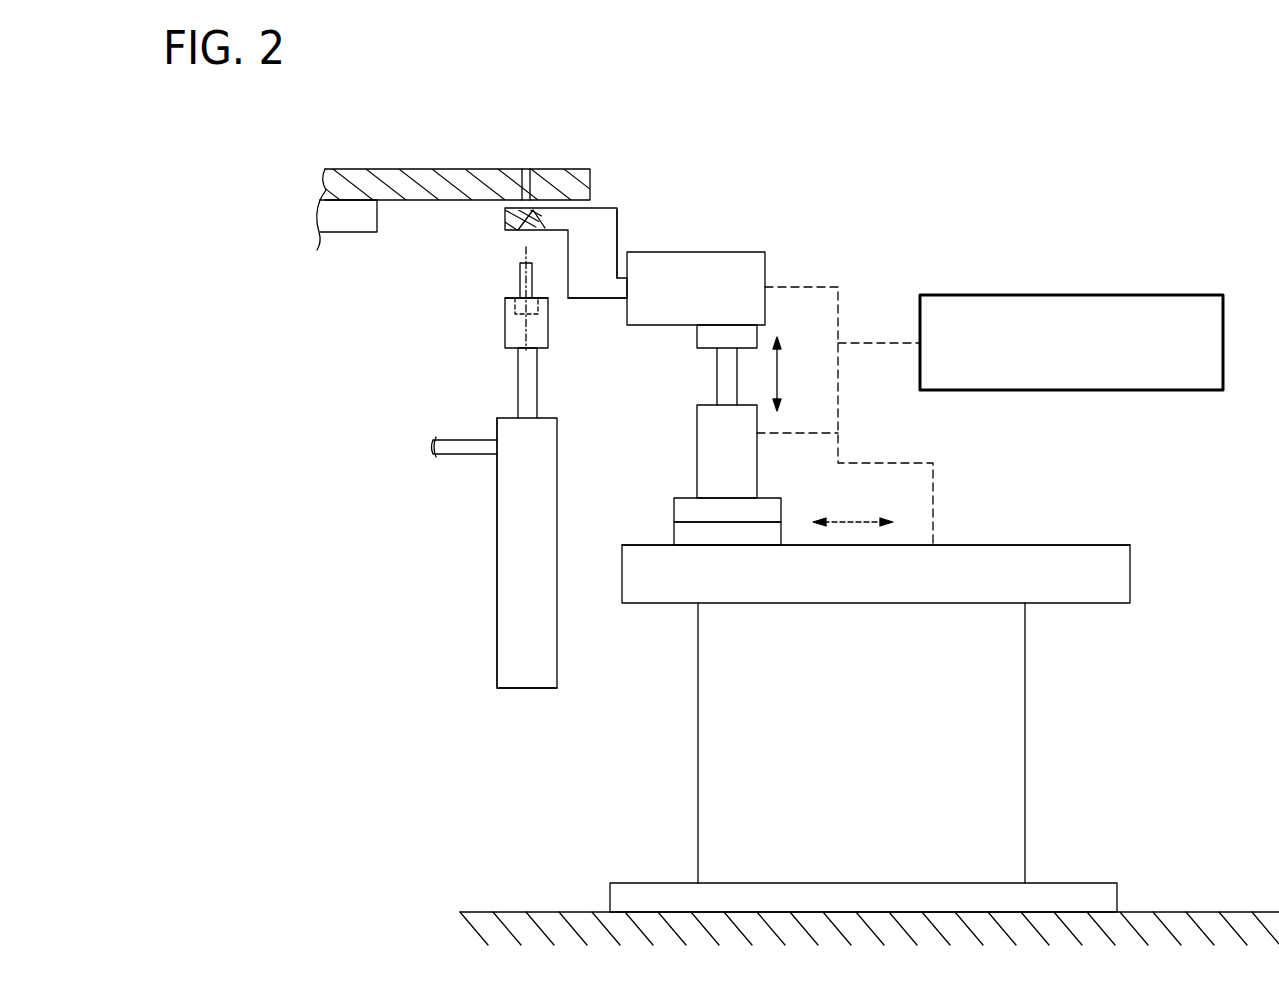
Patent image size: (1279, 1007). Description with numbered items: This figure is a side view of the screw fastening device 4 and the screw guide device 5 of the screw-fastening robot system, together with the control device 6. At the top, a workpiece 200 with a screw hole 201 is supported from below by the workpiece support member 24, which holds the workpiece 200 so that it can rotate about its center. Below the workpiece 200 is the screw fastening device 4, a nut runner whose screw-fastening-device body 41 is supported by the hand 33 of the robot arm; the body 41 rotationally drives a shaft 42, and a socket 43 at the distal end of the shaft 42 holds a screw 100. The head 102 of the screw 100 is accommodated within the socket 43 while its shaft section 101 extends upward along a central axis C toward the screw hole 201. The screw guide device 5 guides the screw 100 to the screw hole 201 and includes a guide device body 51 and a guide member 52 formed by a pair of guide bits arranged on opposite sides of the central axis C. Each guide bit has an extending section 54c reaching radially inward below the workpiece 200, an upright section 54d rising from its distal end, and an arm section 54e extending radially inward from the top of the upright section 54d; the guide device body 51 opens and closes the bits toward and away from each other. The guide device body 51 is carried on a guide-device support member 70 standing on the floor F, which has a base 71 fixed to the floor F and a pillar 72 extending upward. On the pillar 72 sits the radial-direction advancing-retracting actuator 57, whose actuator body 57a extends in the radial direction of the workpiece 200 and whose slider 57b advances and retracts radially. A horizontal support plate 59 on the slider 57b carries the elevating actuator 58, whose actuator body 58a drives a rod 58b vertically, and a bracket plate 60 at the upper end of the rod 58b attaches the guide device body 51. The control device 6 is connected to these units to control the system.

The workpiece 200 is at (372, 158).
The screw hole 201 is at (523, 166).
The workpiece support member 24 is at (338, 234).
The guide member 52 is at (618, 212).
The arm section 54e is at (565, 208).
The upright section 54d is at (618, 232).
The extending section 54c is at (589, 299).
The guide device body 51 is at (731, 251).
The bracket plate 60 is at (758, 333).
The elevating actuator 58 is at (722, 423).
The actuator body 58a is at (696, 452).
The rod 58b is at (716, 377).
The support plate 59 is at (673, 505).
The slider 57b is at (673, 532).
The radial-direction advancing-retracting actuator 57 is at (876, 526).
The actuator body 57a is at (1057, 544).
The guide-device support member 70 is at (873, 757).
The pillar 72 is at (1027, 741).
The base 71 is at (1072, 882).
The floor F is at (545, 911).
The control device 6 is at (1065, 294).
The screw guide device 5 is at (828, 252).
The central axis C is at (525, 248).
The shaft section 101 is at (518, 266).
The head 102 is at (504, 336).
The screw 100 is at (500, 298).
The socket 43 is at (516, 349).
The shaft 42 is at (538, 398).
The screw-fastening-device body 41 is at (496, 610).
The hand 33 is at (460, 458).
The screw fastening device 4 is at (492, 668).